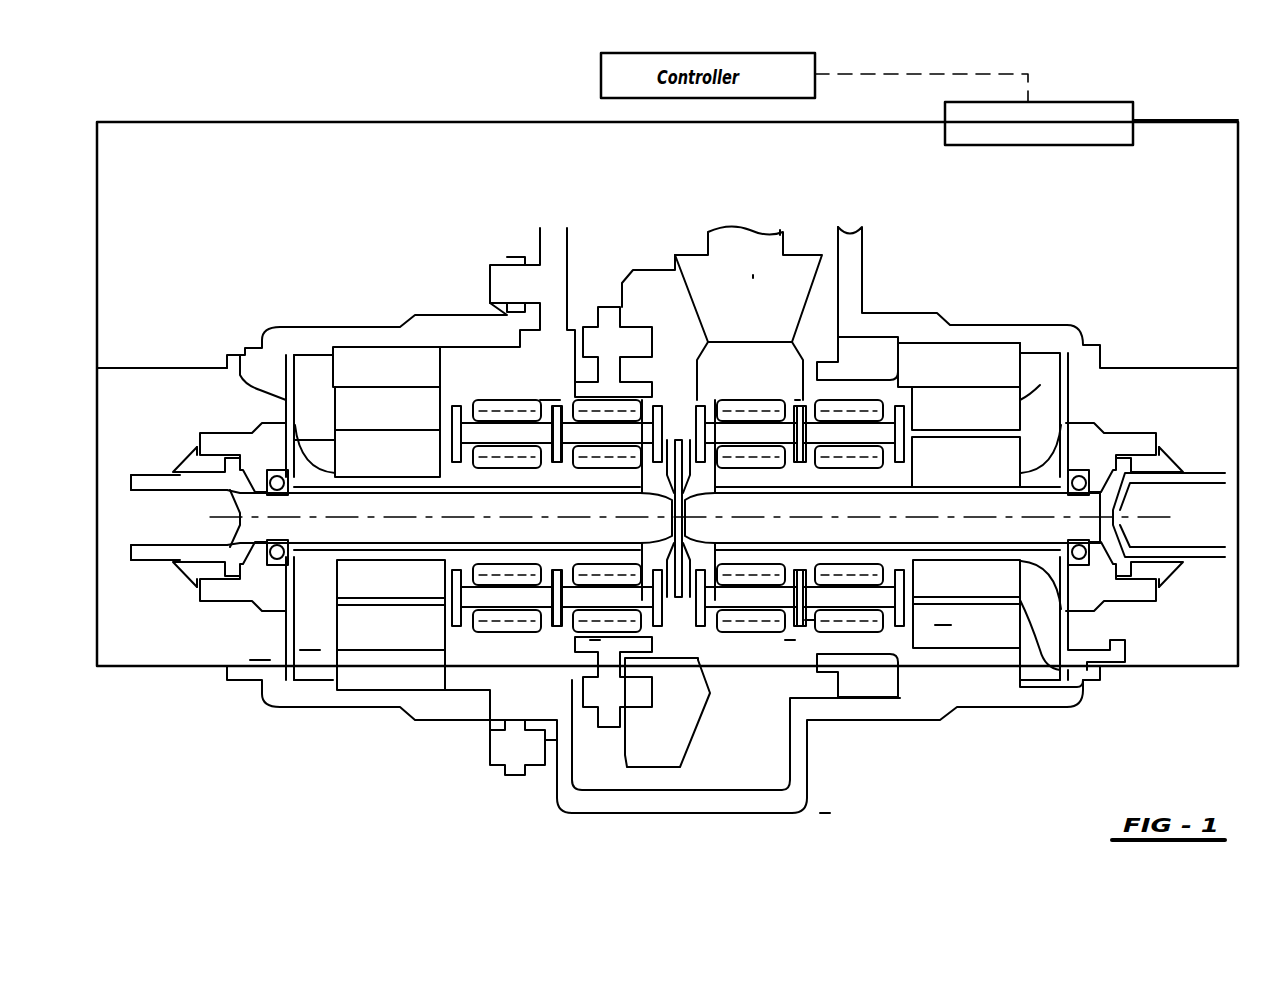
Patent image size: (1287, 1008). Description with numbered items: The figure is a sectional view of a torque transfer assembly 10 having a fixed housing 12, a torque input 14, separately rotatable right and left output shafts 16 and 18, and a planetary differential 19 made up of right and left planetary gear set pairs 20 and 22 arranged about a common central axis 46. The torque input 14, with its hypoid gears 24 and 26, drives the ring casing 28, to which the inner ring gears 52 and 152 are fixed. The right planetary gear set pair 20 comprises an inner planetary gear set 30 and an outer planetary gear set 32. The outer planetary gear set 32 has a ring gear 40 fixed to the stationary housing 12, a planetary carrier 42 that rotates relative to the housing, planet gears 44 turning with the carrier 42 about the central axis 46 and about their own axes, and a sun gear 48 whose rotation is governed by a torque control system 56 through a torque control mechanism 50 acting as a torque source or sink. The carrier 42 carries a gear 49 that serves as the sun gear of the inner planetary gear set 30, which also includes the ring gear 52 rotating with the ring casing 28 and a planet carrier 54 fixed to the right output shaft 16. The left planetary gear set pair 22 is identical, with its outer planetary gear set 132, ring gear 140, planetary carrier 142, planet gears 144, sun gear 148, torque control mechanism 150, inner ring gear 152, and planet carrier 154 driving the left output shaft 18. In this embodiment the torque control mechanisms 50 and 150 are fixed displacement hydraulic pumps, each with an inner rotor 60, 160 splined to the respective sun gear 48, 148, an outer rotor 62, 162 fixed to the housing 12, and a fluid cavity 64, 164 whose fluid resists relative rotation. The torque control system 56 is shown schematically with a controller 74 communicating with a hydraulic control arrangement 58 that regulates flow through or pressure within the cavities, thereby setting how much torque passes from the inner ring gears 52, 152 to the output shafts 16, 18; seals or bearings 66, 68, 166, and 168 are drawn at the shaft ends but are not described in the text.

The torque transfer assembly 10 is at (832, 824).
The fixed housing 12 is at (658, 803).
The torque input 14 is at (740, 213).
The right output shaft 16 is at (1207, 528).
The left output shaft 18 is at (158, 532).
The planetary differential 19 is at (568, 350).
The right planetary gear set pair 20 is at (795, 393).
The left planetary gear set pair 22 is at (553, 405).
The hypoid gear 24 is at (780, 235).
The hypoid gear 26 is at (637, 313).
The ring casing 28 is at (642, 322).
The inner planetary gear set 30 is at (788, 643).
The outer planetary gear set 32 is at (810, 643).
The ring gear 40 is at (860, 396).
The planetary carrier 42 is at (812, 420).
The planet gears 44 is at (846, 578).
The central axis 46 is at (1120, 517).
The sun gear 48 is at (835, 620).
The gear 49 is at (753, 280).
The torque control mechanism 50 is at (1030, 388).
The inner ring gear 52 is at (737, 400).
The planet carrier 54 is at (718, 633).
The torque control system 56 is at (1184, 82).
The hydraulic control arrangement 58 is at (1044, 141).
The inner rotor 60 is at (1008, 598).
The outer rotor 62 is at (943, 632).
The fluid cavity 64 is at (990, 582).
The end seal 66 is at (1046, 433).
The end seal 68 is at (1051, 618).
The controller 74 is at (601, 74).
The outer planetary gear set 132 is at (460, 625).
The ring gear 140 is at (485, 392).
The planetary carrier 142 is at (480, 580).
The planet gears 144 is at (588, 580).
The sun gear 148 is at (350, 575).
The torque control mechanism 150 is at (327, 400).
The inner ring gear 152 is at (595, 647).
The planet carrier 154 is at (610, 660).
The inner rotor 160 is at (260, 666).
The outer rotor 162 is at (408, 638).
The fluid cavity 164 is at (305, 658).
The seal 166 is at (300, 442).
The seal 168 is at (313, 620).